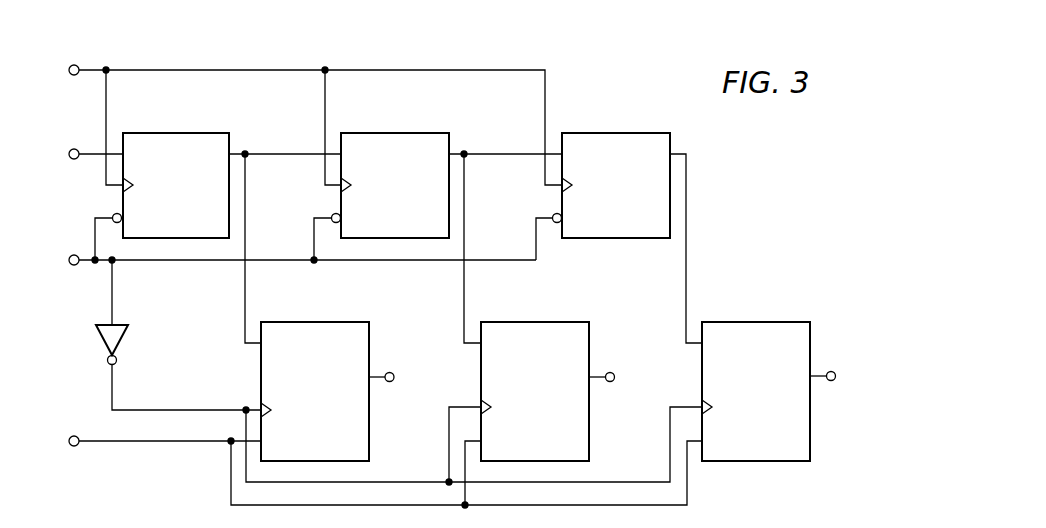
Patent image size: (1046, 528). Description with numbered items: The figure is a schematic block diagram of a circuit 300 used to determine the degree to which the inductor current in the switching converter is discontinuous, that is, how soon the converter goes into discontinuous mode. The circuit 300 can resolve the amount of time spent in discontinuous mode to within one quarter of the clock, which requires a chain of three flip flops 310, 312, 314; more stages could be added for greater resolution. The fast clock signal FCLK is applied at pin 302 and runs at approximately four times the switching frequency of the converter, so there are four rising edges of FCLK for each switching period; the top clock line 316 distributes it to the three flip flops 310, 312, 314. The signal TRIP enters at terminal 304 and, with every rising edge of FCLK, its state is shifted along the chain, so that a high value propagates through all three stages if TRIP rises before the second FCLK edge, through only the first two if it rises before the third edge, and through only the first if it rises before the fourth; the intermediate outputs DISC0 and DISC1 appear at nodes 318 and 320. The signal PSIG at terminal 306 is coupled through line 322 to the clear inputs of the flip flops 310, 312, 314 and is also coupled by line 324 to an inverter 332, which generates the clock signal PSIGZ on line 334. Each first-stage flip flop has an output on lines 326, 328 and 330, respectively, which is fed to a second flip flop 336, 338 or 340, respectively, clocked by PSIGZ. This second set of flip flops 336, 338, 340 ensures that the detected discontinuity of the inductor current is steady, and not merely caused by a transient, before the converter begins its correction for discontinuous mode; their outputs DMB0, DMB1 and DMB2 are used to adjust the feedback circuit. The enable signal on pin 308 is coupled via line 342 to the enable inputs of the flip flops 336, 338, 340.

The circuit 300 is at (831, 159).
The pin 302 is at (72, 64).
The TRIP input terminal 304 is at (72, 148).
The terminal 306 is at (72, 254).
The pin 308 is at (74, 447).
The flip flop 310 is at (176, 132).
The flip flop 312 is at (396, 132).
The flip flop 314 is at (616, 132).
The clock line 316 is at (212, 69).
The DISC0 node 318 is at (292, 160).
The DISC1 node 320 is at (510, 160).
The PSIG clear line 322 is at (158, 262).
The line 324 is at (110, 292).
The line 326 is at (245, 316).
The line 328 is at (463, 292).
The line 330 is at (688, 258).
The inverter 332 is at (102, 343).
The line 334 is at (212, 408).
The second flip flop 336 is at (313, 321).
The second flip flop 338 is at (535, 321).
The second flip flop 340 is at (755, 321).
The line 342 is at (152, 446).